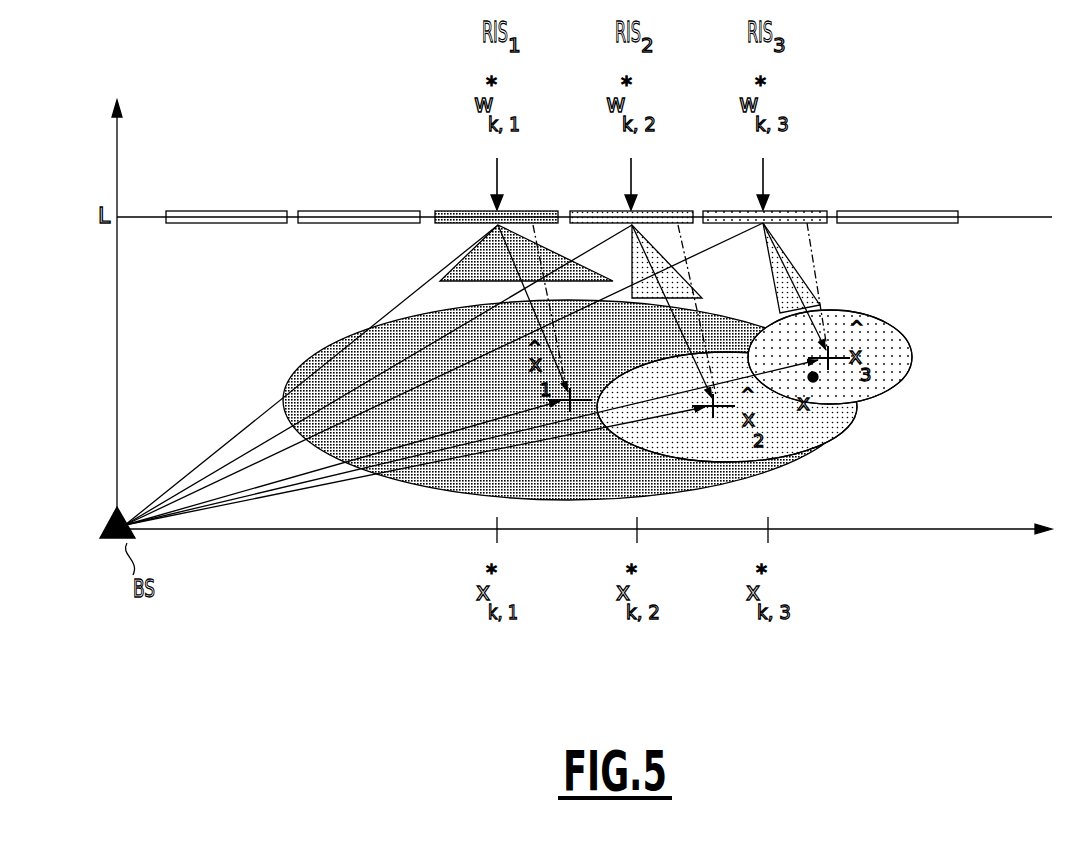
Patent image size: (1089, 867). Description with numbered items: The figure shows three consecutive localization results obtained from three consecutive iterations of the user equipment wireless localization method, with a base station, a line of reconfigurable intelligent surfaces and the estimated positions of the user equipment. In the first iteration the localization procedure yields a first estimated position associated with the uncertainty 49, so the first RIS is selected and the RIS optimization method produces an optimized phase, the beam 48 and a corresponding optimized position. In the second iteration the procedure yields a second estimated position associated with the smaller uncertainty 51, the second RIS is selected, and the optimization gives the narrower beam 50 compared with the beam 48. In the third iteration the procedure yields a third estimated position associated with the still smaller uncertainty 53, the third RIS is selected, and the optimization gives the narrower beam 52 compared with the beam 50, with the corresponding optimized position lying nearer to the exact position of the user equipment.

The beam 48 is at (467, 270).
The uncertainty 49 is at (303, 368).
The narrower beam 50 is at (661, 252).
The smaller uncertainty 51 is at (783, 440).
The narrower beam 52 is at (802, 283).
The smaller uncertainty 53 is at (890, 352).